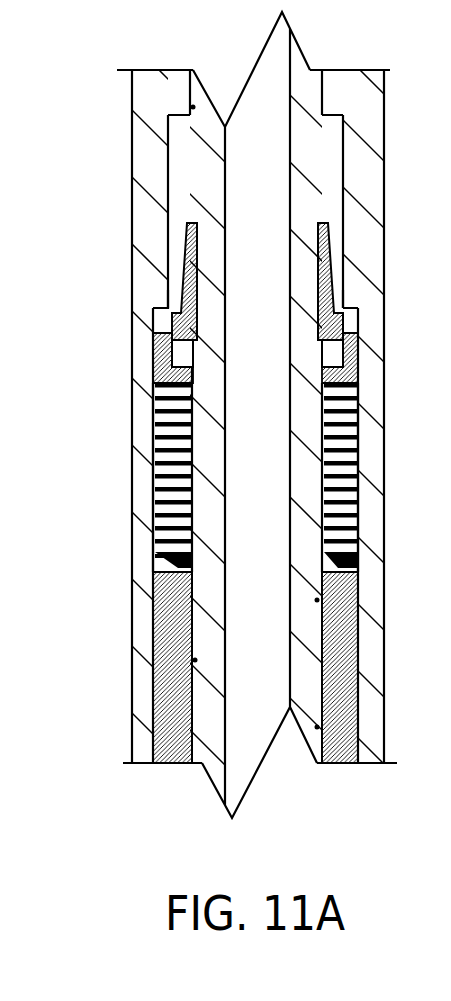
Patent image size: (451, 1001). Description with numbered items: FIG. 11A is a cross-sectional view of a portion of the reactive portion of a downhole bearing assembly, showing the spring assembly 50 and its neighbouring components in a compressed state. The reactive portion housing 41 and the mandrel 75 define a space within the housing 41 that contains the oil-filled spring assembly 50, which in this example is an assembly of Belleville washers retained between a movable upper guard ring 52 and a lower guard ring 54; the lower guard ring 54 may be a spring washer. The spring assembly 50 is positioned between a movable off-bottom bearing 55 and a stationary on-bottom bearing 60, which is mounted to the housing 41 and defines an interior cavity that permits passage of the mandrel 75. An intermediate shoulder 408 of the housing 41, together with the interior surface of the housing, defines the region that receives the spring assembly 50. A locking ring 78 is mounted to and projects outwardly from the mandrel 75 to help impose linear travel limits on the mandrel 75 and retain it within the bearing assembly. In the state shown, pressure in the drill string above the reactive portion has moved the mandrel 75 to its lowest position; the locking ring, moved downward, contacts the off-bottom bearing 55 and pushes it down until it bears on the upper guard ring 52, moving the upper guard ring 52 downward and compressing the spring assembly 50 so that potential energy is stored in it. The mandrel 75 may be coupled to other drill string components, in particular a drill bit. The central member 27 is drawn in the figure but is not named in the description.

The reactive portion housing 41 is at (371, 106).
The mandrel 27 is at (274, 180).
The mandrel 75 is at (210, 703).
The locking ring 78 is at (190, 245).
The intermediate shoulder 408 is at (153, 300).
The off-bottom bearing 55 is at (183, 353).
The upper guard ring 52 is at (175, 370).
The spring assembly 50 is at (172, 473).
The lower guard ring 54 is at (163, 562).
The on-bottom bearing 60 is at (172, 655).